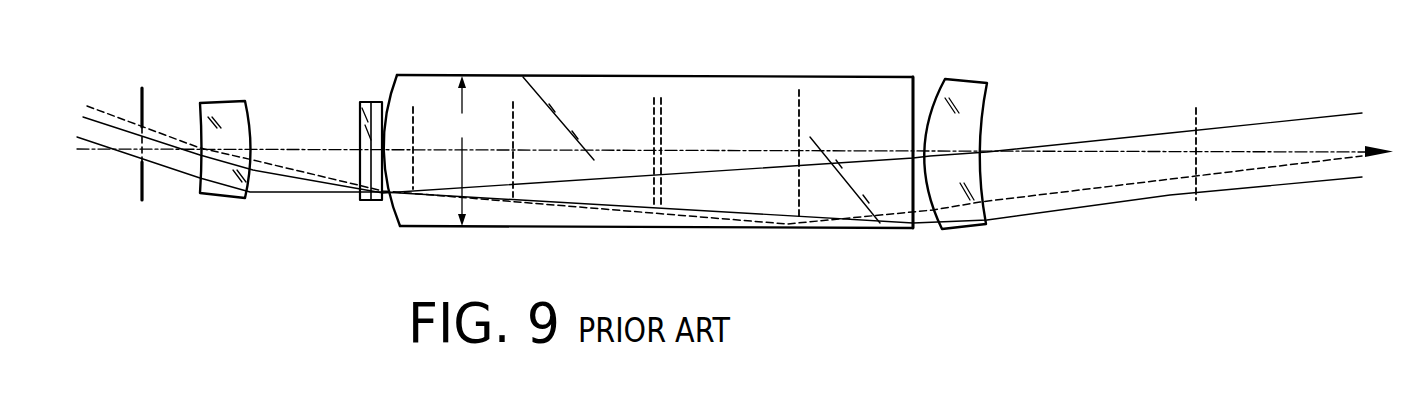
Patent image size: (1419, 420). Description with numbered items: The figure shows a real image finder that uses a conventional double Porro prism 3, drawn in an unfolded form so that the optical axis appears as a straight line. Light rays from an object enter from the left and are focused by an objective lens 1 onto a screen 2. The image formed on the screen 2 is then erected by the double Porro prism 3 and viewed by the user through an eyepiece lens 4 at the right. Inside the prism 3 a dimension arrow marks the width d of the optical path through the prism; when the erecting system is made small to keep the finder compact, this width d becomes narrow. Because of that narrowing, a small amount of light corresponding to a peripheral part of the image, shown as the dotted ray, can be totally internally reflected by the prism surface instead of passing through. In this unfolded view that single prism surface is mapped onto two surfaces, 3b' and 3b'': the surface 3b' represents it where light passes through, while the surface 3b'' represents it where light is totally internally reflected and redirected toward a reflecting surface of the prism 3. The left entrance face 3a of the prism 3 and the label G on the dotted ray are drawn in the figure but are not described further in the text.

The objective lens 1 is at (234, 101).
The screen 2 is at (372, 100).
The double Porro prism 3 is at (629, 151).
The curved entrance surface of prism 3a is at (393, 217).
The surface 3b' is at (904, 126).
The surface 3b" 3b'' is at (842, 207).
The eyepiece lens 4 is at (963, 78).
The light ray G is at (687, 218).
The width of optical path d is at (462, 151).